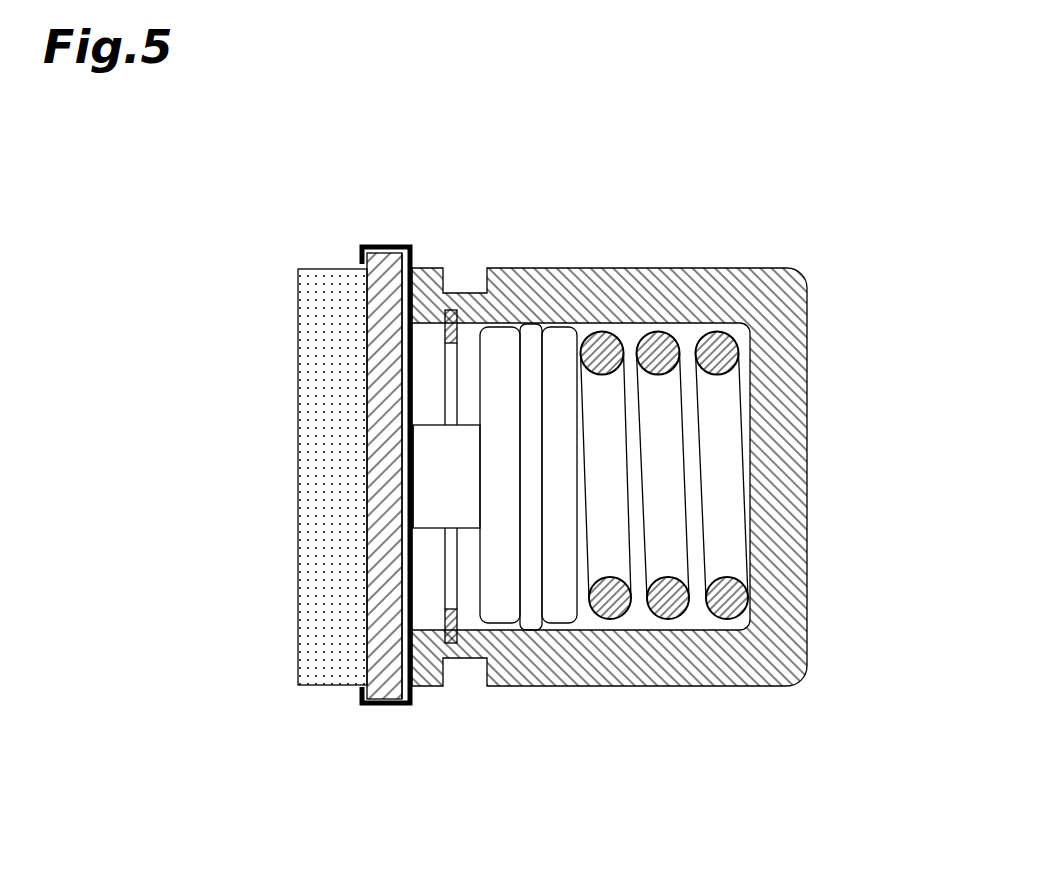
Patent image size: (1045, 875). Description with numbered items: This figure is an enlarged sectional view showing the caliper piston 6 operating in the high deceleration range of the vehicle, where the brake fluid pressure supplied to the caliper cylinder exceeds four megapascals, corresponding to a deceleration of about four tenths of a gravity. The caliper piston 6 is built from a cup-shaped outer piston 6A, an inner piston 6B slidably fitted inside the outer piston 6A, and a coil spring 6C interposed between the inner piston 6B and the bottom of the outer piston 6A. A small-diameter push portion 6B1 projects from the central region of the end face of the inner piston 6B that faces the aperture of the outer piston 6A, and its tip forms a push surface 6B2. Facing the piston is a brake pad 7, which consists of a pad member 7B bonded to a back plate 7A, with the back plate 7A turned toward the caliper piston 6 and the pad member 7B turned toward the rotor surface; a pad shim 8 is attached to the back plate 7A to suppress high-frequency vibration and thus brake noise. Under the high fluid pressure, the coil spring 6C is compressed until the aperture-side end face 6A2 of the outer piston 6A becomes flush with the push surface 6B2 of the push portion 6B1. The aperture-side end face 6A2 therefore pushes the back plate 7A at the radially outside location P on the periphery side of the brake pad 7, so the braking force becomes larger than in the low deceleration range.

The caliper piston 6 is at (556, 471).
The outer piston 6A is at (492, 409).
The aperture-side end face 6A2 is at (410, 375).
The inner piston 6B is at (440, 566).
The small-diameter push portion 6B1 is at (443, 457).
The push surface 6B2 is at (417, 478).
The coil spring 6C is at (743, 420).
The brake pad 7 is at (327, 394).
The back plate 7A is at (385, 250).
The pad member 7B is at (330, 268).
The pad shim 8 is at (385, 707).
The radially outside location P is at (408, 290).